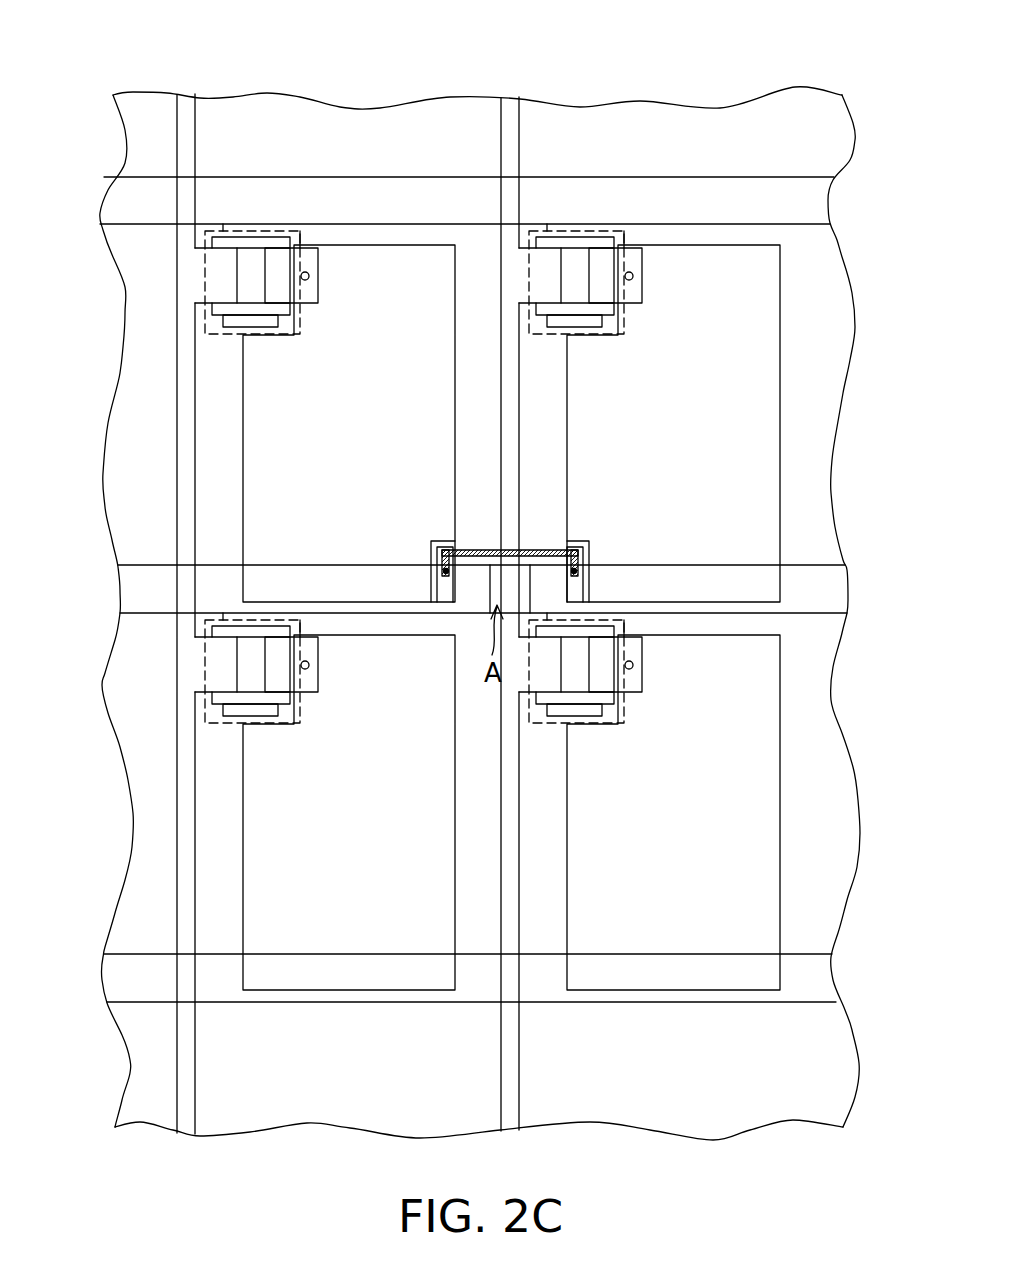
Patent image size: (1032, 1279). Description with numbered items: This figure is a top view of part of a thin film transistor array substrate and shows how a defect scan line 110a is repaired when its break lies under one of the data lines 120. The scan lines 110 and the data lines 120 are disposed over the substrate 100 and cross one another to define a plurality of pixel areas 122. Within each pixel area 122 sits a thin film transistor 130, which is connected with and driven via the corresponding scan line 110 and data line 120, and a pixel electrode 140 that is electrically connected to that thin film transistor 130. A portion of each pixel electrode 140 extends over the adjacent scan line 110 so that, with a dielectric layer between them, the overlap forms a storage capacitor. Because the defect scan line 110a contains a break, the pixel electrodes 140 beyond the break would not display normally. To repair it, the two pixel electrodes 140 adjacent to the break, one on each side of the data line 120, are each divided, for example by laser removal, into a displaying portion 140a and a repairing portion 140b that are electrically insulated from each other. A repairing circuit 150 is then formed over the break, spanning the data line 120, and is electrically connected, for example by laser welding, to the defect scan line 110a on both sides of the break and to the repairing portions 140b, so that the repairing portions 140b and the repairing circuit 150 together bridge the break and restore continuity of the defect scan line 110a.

The substrate 100 is at (808, 1059).
The scan lines 110 is at (127, 200).
The defect scan line 110a is at (138, 590).
The data lines 120 is at (187, 113).
The pixel areas 122 is at (208, 393).
The thin film transistors 130 is at (527, 237).
The pixel electrodes 140 is at (262, 872).
The displaying portion 140a is at (387, 560).
The repairing portion 140b is at (451, 599).
The repairing circuit 150 is at (486, 548).